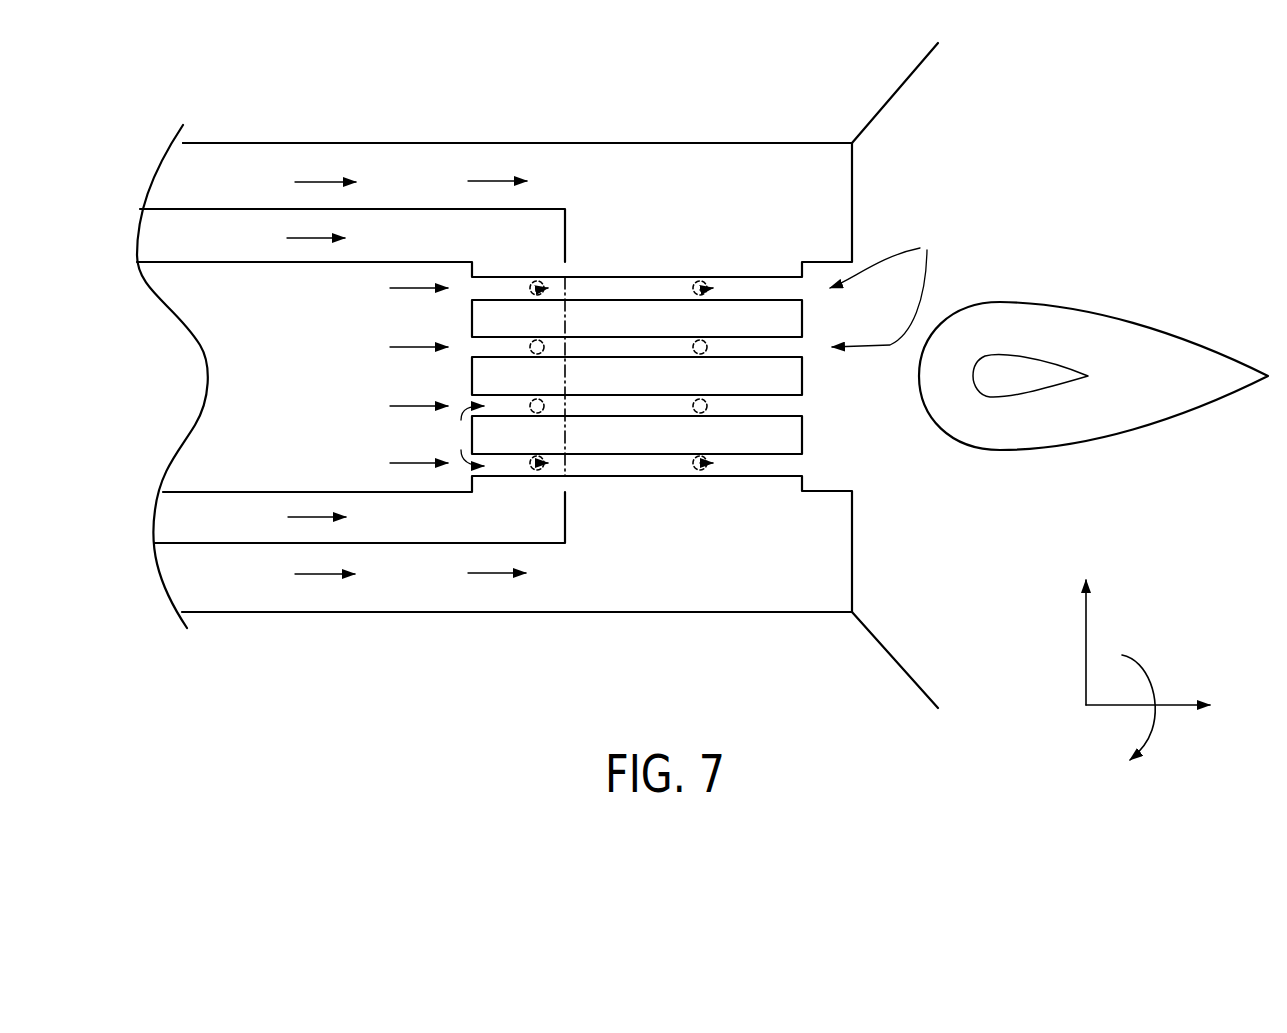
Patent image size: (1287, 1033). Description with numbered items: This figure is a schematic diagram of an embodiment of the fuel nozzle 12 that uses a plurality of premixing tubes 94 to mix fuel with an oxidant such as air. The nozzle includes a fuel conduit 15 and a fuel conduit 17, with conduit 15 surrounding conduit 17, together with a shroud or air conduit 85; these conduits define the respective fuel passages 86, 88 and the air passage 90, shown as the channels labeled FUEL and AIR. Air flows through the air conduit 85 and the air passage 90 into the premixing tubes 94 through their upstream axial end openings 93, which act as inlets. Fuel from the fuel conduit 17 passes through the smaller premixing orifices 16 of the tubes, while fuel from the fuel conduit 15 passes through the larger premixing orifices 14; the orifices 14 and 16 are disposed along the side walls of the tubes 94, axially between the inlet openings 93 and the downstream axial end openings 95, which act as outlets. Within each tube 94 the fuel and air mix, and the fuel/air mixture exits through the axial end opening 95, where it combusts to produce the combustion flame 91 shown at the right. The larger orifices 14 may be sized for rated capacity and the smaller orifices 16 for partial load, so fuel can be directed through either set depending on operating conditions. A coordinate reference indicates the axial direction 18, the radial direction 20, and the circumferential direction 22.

The fuel nozzle 12 is at (728, 106).
The premixing orifices 14 is at (704, 286).
The fuel conduit 15 is at (510, 142).
The premixing orifices 16 is at (538, 284).
The fuel conduit 17 is at (372, 208).
The axial direction 18 is at (1168, 707).
The radial direction 20 is at (1085, 627).
The circumferential direction 22 is at (1147, 671).
The air conduit 85 is at (317, 490).
The fuel passage 86 is at (534, 284).
The fuel passage 88 is at (700, 284).
The air passage 90 is at (354, 342).
The combustion flame 91 is at (1138, 318).
The axial end openings 93 is at (462, 436).
The premixing tubes 94 is at (747, 277).
The axial end openings 95 is at (882, 282).